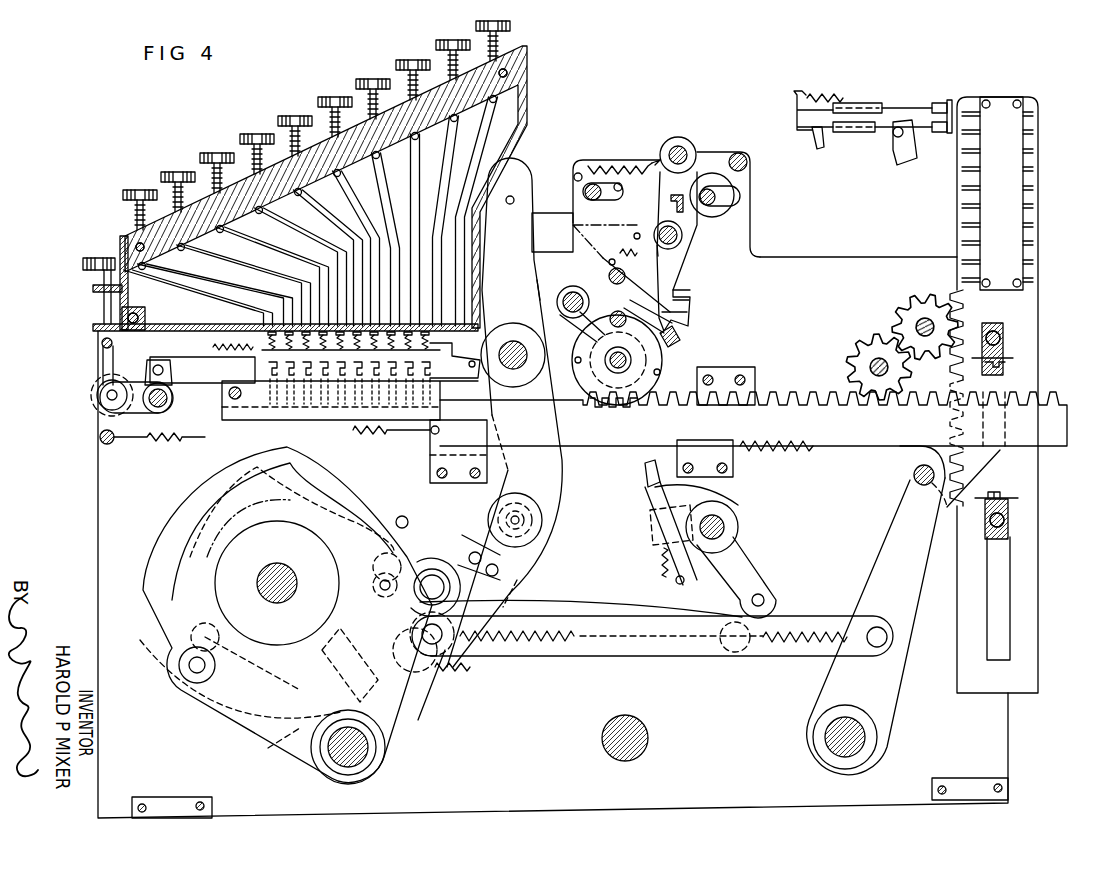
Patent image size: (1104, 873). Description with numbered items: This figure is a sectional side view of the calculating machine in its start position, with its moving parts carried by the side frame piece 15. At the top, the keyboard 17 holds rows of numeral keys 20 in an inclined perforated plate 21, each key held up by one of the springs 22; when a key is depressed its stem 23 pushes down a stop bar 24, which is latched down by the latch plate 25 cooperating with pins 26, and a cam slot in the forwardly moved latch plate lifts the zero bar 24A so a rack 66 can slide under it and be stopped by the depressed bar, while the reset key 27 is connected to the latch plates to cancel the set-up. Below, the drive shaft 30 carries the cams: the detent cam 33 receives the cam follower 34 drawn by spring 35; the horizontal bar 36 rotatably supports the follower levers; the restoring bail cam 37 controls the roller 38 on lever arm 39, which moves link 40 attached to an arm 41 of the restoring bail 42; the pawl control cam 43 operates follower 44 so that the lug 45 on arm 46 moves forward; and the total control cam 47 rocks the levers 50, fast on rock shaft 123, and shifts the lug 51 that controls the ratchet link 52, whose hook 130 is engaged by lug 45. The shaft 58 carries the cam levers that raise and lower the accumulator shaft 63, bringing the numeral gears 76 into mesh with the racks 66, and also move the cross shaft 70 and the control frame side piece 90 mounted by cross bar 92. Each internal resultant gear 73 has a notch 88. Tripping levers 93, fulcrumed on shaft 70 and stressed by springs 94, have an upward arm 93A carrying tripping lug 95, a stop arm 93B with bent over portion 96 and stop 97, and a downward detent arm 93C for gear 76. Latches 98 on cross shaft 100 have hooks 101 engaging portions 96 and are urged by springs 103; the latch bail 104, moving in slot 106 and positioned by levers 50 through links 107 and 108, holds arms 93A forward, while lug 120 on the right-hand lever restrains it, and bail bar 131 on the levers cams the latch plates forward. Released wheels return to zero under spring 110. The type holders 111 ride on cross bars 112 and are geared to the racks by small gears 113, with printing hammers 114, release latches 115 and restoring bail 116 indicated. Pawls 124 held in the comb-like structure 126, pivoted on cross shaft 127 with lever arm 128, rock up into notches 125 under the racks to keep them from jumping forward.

The side frame piece 15 is at (98, 554).
The keyboard 17 is at (242, 116).
The numeral keys 20 is at (371, 97).
The inclined perforated plate 21 is at (121, 240).
The springs 22 is at (505, 46).
The stem 23 is at (487, 127).
The stop bar 24 is at (247, 337).
The zero bar 24A is at (432, 460).
The latch plate 25 is at (196, 374).
The pins 26 is at (262, 366).
The reset key 27 is at (84, 264).
The drive shaft 30 is at (283, 585).
The detent cam 33 is at (195, 510).
The cam follower 34 is at (187, 674).
The spring 35 is at (510, 655).
The horizontal bar 36 is at (357, 758).
The restoring bail cam 37 is at (230, 595).
The cam follower roller 38 is at (433, 571).
The lever arm 39 is at (428, 702).
The link 40 is at (600, 648).
The arm of restoring bail 41 is at (883, 568).
The restoring bail 42 is at (908, 473).
The pawl control cam 43 is at (260, 512).
The cam follower 44 is at (198, 636).
The lug 45 is at (380, 583).
The arm 46 is at (386, 568).
The total control cam 47 is at (348, 477).
The levers 50 is at (524, 404).
The lug 51 is at (517, 582).
The ratchet link 52 is at (563, 603).
The shaft 58 is at (648, 735).
The accumulator shaft 63 is at (657, 392).
The racks 66 is at (790, 425).
The cross shaft 70 is at (609, 277).
The internal resultant gear 73 is at (623, 361).
The numeral gear 76 is at (580, 388).
The notch 88 is at (686, 339).
The side piece 90 is at (650, 213).
The cross bar 92 is at (675, 146).
The tripping lever 93 is at (603, 250).
The upwardly extending arm 93A is at (577, 198).
The stop arm 93B is at (688, 312).
The downwardly extending arm 93C is at (577, 356).
The spring 94 is at (598, 170).
The tripping lug 95 is at (573, 238).
The bent over portion 96 is at (681, 290).
The stop 97 is at (681, 340).
The latch 98 is at (664, 251).
The cross shaft 100 is at (684, 230).
The hook 101 is at (688, 300).
The spring 103 is at (626, 250).
The latch bail 104 is at (627, 157).
The slot 106 is at (622, 187).
The links 107 is at (546, 249).
The links 108 is at (712, 172).
The spring 110 is at (351, 432).
The type holders 111 is at (995, 108).
The cross bars 112 is at (1004, 328).
The small gears 113 is at (905, 318).
The printing hammers 114 is at (912, 118).
The release latches 115 is at (816, 152).
The restoring bail 116 is at (897, 133).
The lug 120 is at (520, 521).
The rock shaft 123 is at (514, 372).
The pawls 124 is at (650, 477).
The notches 125 is at (758, 450).
The comb-like structure 126 is at (652, 523).
The cross shaft 127 is at (727, 525).
The lever arm 128 is at (738, 588).
The hook 130 is at (357, 633).
The bail bar 131 is at (516, 373).